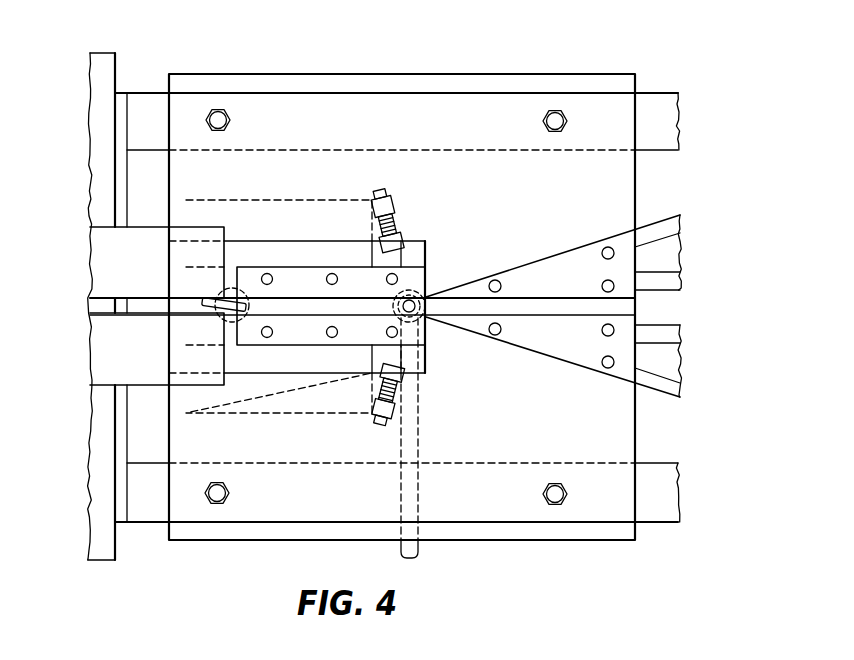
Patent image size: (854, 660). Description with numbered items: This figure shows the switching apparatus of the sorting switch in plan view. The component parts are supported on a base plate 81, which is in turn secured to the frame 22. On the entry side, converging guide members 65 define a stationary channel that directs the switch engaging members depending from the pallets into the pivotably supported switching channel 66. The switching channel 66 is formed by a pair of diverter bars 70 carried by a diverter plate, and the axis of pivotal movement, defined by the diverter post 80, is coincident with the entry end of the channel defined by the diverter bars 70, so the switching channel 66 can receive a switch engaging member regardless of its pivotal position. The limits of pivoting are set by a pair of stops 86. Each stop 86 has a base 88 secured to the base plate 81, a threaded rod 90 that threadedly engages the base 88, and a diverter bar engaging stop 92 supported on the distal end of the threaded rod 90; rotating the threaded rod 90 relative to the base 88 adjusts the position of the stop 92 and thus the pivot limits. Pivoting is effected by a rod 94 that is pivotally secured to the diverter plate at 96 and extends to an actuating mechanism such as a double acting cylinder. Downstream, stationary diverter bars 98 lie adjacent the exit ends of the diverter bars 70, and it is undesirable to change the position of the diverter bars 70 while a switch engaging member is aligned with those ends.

The frame 22 is at (658, 523).
The converging guide members 65 is at (147, 227).
The switching channel 66 is at (290, 333).
The diverter bars 70 is at (280, 241).
The diverter post 80 is at (217, 307).
The base plate 81 is at (635, 185).
The stops 86 is at (376, 190).
The base 88 is at (391, 202).
The threaded rod 90 is at (397, 220).
The diverter bar engaging stop 92 is at (402, 236).
The rod 94 is at (418, 550).
The pivotal connection of rod to diverter plate 96 is at (427, 295).
The stationary diverter bars 98 is at (538, 261).